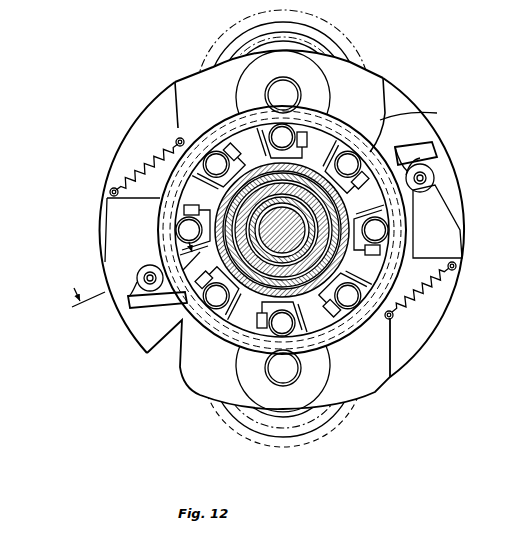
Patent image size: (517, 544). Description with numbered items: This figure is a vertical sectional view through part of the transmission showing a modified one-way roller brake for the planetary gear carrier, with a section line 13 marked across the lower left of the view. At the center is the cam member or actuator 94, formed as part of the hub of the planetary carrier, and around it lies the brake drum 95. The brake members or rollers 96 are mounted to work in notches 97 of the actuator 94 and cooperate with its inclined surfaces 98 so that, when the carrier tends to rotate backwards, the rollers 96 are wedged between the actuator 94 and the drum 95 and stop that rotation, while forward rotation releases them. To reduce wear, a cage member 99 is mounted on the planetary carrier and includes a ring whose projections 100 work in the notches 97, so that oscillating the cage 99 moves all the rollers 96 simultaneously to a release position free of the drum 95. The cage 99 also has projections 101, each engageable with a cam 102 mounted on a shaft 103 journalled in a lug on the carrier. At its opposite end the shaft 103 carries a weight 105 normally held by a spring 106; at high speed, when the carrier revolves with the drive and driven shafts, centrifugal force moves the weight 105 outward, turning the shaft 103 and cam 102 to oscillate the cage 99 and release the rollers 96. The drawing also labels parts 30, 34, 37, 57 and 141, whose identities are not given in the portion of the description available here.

The section line of FIG. 13 is at (141, 285).
The shaft 30 is at (297, 196).
The hub sleeve 34 is at (258, 184).
The housing 37 is at (362, 92).
The bolt hole 57 is at (276, 95).
The cam member or actuator 94 is at (374, 204).
The brake drum 95 is at (412, 118).
The brake members or rollers 96 is at (380, 228).
The notches 97 is at (358, 142).
The inclined surfaces 98 is at (420, 290).
The cage member 99 is at (205, 132).
The projections 100 is at (400, 247).
The projections 101 is at (432, 143).
The cam 102 is at (445, 168).
The shaft 103 is at (424, 180).
The weight 105 is at (128, 216).
The spring 106 is at (134, 168).
The bottom lobe of housing 141 is at (268, 252).